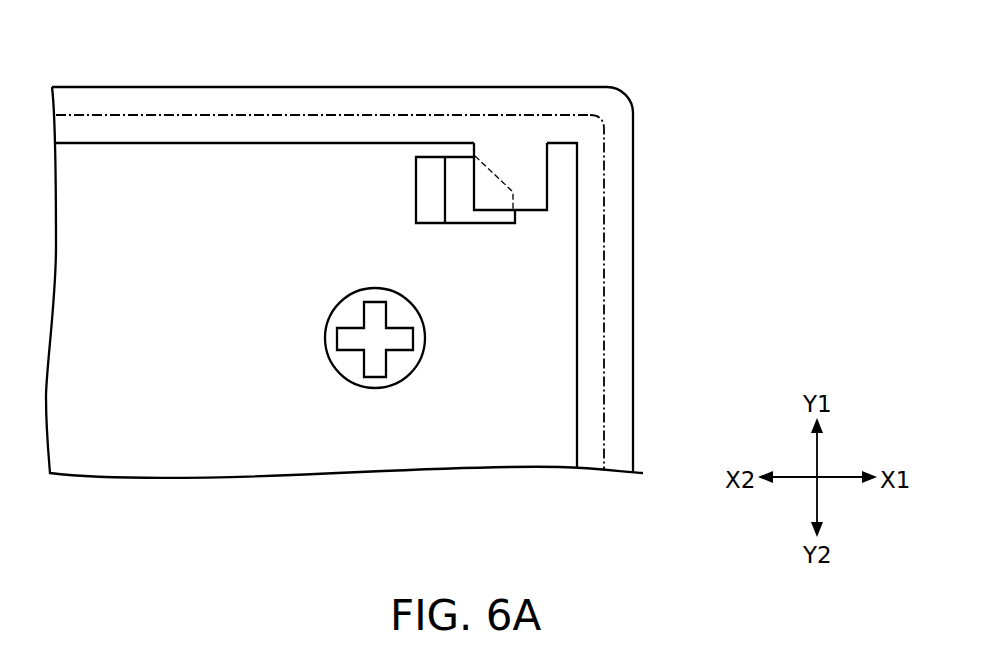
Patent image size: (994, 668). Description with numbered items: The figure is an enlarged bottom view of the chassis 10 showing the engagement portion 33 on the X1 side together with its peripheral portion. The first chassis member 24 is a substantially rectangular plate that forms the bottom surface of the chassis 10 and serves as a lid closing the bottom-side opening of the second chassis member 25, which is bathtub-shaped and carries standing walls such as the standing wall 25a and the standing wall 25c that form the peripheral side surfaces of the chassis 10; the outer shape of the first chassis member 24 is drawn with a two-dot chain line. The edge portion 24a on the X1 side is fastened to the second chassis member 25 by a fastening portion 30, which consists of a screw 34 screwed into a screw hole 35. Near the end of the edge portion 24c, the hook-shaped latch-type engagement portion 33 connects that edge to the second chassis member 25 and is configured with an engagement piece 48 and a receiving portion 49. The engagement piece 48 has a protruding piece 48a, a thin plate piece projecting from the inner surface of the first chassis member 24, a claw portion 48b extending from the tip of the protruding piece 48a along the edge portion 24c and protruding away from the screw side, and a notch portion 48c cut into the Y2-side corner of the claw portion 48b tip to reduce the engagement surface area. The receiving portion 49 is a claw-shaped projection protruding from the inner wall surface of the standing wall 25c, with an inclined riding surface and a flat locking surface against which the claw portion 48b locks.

The chassis 10 is at (72, 27).
The first chassis member 24 is at (389, 247).
The edge portion 24a is at (592, 347).
The edge portion 24c is at (278, 130).
The second chassis member 25 is at (387, 248).
The standing wall 25a is at (622, 435).
The standing wall 25c is at (184, 100).
The fastening portion 30 is at (374, 428).
The engagement portion 33 is at (456, 138).
The screw 34 is at (375, 339).
The screw hole 35 is at (375, 388).
The engagement piece 48 is at (539, 278).
The protruding piece 48a is at (432, 192).
The claw portion 48b is at (492, 215).
The notch portion 48c is at (490, 176).
The receiving portion 49 is at (537, 162).